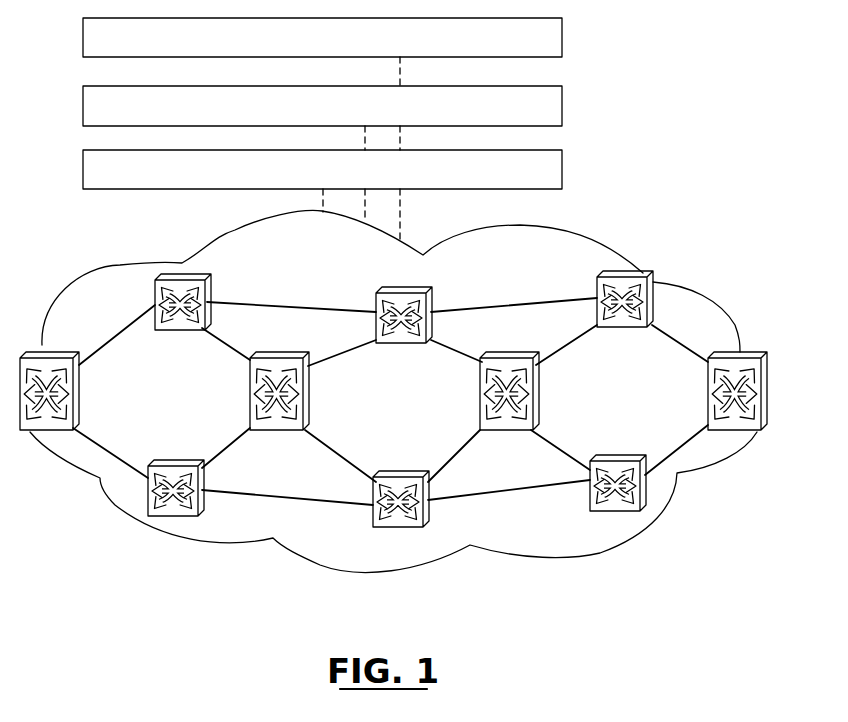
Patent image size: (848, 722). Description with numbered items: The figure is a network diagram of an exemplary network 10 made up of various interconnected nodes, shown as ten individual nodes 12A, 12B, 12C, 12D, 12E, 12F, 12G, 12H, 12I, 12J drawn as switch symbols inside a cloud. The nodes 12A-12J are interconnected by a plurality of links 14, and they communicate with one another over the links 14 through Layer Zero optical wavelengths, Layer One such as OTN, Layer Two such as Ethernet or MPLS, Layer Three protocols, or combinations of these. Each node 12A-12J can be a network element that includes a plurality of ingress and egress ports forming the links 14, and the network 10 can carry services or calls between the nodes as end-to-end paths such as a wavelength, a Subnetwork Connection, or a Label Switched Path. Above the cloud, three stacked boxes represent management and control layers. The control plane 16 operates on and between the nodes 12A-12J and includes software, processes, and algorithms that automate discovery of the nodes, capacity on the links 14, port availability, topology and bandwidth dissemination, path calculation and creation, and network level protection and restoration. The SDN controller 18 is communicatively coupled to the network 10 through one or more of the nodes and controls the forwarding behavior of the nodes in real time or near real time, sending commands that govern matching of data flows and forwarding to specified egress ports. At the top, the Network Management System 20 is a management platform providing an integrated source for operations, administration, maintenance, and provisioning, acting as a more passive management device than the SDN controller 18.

The network 10 is at (693, 129).
The node 12A is at (80, 392).
The node 12B is at (311, 392).
The node 12C is at (537, 392).
The node 12D is at (750, 352).
The node 12E is at (190, 278).
The node 12F is at (427, 292).
The node 12G is at (632, 276).
The node 12H is at (173, 462).
The node 12I is at (390, 470).
The node 12J is at (605, 460).
The links 14 is at (287, 304).
The control plane 16 is at (562, 175).
The SDN controller 18 is at (562, 112).
The Network Management System (NMS) 20 is at (562, 42).